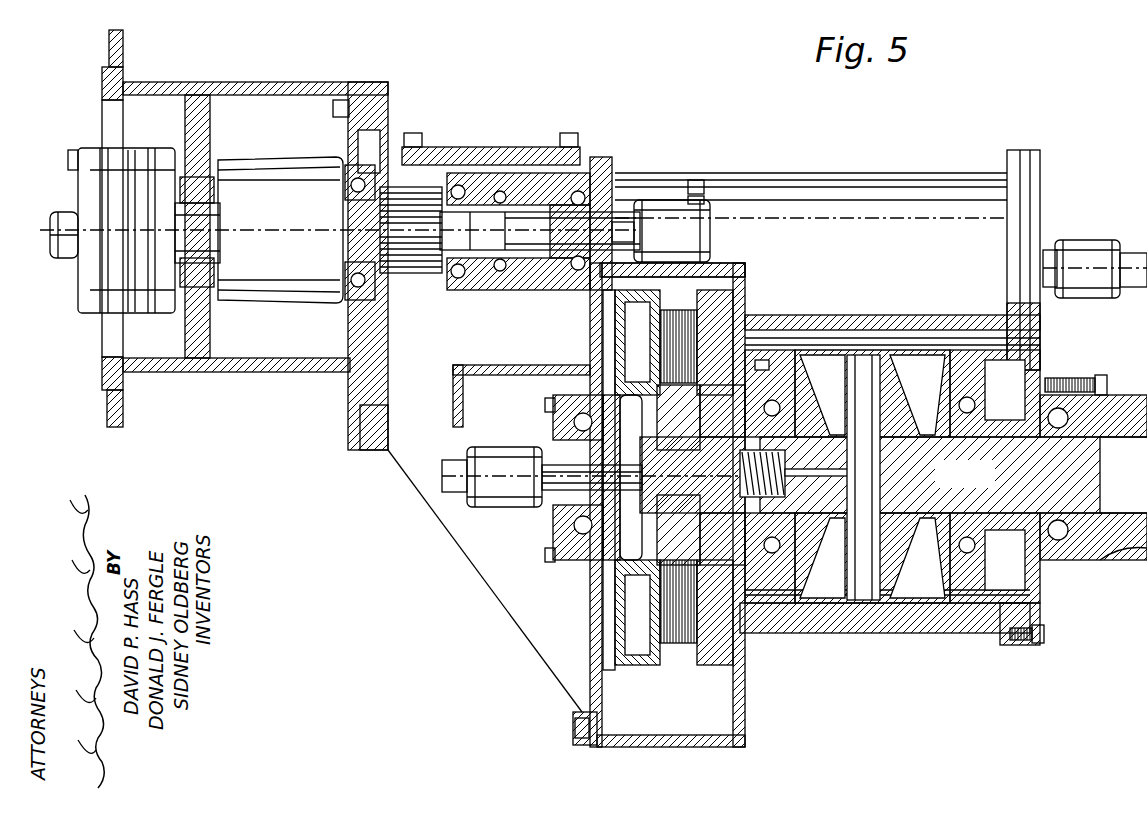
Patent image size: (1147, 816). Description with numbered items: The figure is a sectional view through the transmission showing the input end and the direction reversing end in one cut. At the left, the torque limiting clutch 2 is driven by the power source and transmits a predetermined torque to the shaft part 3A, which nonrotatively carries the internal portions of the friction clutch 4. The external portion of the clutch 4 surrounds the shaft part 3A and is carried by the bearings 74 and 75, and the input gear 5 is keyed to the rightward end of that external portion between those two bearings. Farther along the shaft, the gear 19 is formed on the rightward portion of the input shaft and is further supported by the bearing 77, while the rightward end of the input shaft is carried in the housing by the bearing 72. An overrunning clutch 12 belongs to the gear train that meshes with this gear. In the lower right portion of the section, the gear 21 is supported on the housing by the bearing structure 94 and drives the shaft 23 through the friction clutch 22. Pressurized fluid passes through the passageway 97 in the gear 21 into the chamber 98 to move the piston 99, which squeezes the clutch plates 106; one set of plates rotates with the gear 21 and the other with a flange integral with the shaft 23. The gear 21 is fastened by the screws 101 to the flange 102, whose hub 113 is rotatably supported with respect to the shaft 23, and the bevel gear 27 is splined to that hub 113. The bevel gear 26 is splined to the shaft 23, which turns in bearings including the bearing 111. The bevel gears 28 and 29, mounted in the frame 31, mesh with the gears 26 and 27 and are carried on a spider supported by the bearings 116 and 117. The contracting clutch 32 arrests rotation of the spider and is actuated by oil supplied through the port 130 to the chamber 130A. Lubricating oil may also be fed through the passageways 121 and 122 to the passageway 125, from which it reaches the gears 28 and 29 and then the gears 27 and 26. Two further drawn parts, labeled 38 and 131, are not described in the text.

The torque limiting clutch 2 is at (152, 300).
The part of the shaft 3A is at (200, 222).
The friction clutch 4 is at (268, 297).
The bearing 74 is at (355, 272).
The input gear 5 is at (410, 272).
The bearing housing 38 is at (520, 235).
The gear 19 is at (545, 262).
The bearing 75 is at (460, 185).
The bearing 77 is at (503, 191).
The bearing 72 is at (582, 190).
The bevel gear 27 is at (790, 360).
The bevel gear 28 is at (838, 390).
The bevel gear 26 is at (920, 360).
The bearing 111 is at (730, 430).
The hub 113 is at (728, 440).
The bearing 117 is at (745, 545).
The bearing structure 94 is at (580, 420).
The passageway 97 is at (560, 470).
The chamber 98 is at (552, 505).
The piston 99 is at (648, 575).
The gear 21 is at (615, 620).
The clutch plates 106 is at (668, 628).
The friction clutch 22 is at (674, 657).
The screws 101 is at (716, 640).
The flange 102 is at (742, 640).
The bevel gear 29 is at (825, 620).
The frame 31 is at (868, 585).
The clutch 32 is at (907, 632).
The plate 131 is at (905, 633).
The bearing 116 is at (950, 580).
The port 130 is at (968, 632).
The chamber 130A is at (1000, 642).
The passageway 121 is at (815, 472).
The passageway 122 is at (850, 495).
The passageway 125 is at (855, 468).
The shaft 23 is at (930, 475).
The overrunning clutch 12 is at (1137, 578).